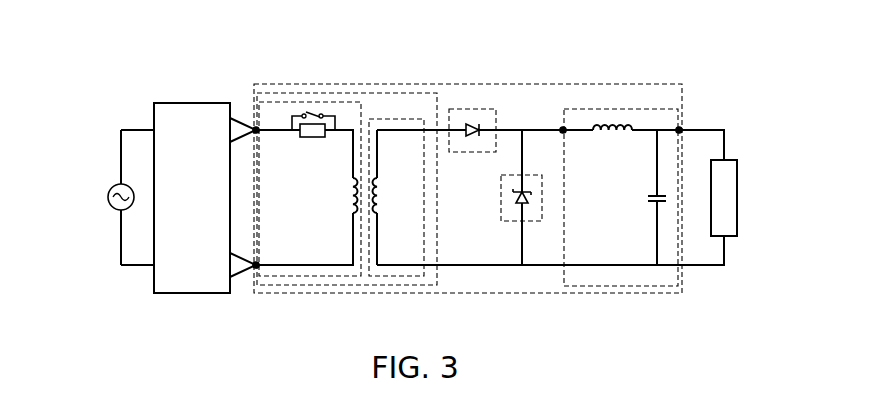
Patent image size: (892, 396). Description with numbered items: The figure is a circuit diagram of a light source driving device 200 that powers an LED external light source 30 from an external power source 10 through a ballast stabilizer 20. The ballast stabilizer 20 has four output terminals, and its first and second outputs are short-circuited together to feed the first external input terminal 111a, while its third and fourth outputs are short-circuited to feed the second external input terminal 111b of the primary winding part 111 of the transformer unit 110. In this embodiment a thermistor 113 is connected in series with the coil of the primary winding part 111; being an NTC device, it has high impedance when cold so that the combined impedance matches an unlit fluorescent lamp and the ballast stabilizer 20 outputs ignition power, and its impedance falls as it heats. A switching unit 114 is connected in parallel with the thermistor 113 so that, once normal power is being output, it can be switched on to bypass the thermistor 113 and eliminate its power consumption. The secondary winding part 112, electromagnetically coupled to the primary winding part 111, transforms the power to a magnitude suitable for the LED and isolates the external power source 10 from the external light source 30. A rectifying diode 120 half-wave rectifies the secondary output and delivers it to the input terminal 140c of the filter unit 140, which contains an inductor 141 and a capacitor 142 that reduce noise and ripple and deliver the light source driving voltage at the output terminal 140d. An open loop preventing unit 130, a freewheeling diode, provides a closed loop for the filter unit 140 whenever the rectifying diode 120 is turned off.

The external power source 10 is at (112, 187).
The ballast stabilizer 20 is at (178, 103).
The external light source 30 is at (733, 237).
The light source driving device 200 is at (660, 84).
The transformer unit 110 is at (370, 93).
The primary winding part 111 is at (283, 102).
The first external input terminal 111a is at (256, 126).
The second external input terminal 111b is at (256, 268).
The secondary winding part 112 is at (412, 119).
The thermistor 113 is at (313, 137).
The switching unit 114 is at (314, 111).
The rectifying diode 120 is at (476, 109).
The open loop preventing unit 130 is at (500, 197).
The filter unit 140 is at (616, 109).
The input terminal 140c is at (563, 127).
The output terminal 140d is at (681, 128).
The inductor 141 is at (613, 136).
The capacitor 142 is at (648, 198).